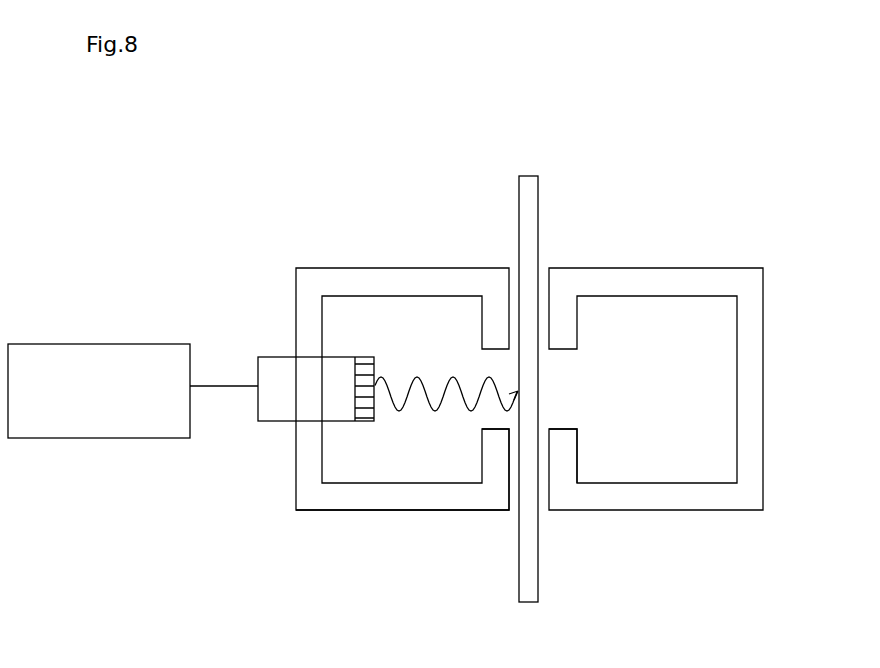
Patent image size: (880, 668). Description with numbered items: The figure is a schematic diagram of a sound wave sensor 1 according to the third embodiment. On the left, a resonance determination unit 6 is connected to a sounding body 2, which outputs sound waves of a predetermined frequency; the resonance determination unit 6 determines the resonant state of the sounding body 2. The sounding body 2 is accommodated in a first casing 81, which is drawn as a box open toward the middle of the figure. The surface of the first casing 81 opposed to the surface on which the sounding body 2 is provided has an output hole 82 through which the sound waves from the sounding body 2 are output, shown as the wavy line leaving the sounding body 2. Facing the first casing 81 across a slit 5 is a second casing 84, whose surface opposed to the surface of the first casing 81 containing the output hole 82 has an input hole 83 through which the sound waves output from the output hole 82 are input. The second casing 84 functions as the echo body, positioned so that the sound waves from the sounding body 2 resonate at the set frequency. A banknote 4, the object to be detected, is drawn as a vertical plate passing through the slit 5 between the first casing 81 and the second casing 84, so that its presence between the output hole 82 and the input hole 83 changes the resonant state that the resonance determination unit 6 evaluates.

The sound wave sensor 1 is at (687, 188).
The sounding body 2 is at (268, 357).
The banknote 4 is at (520, 245).
The slit 5 is at (544, 273).
The resonance determination unit 6 is at (80, 344).
The first casing 81 is at (360, 268).
The output hole 82 is at (491, 412).
The input hole 83 is at (563, 404).
The second casing 84 is at (743, 267).